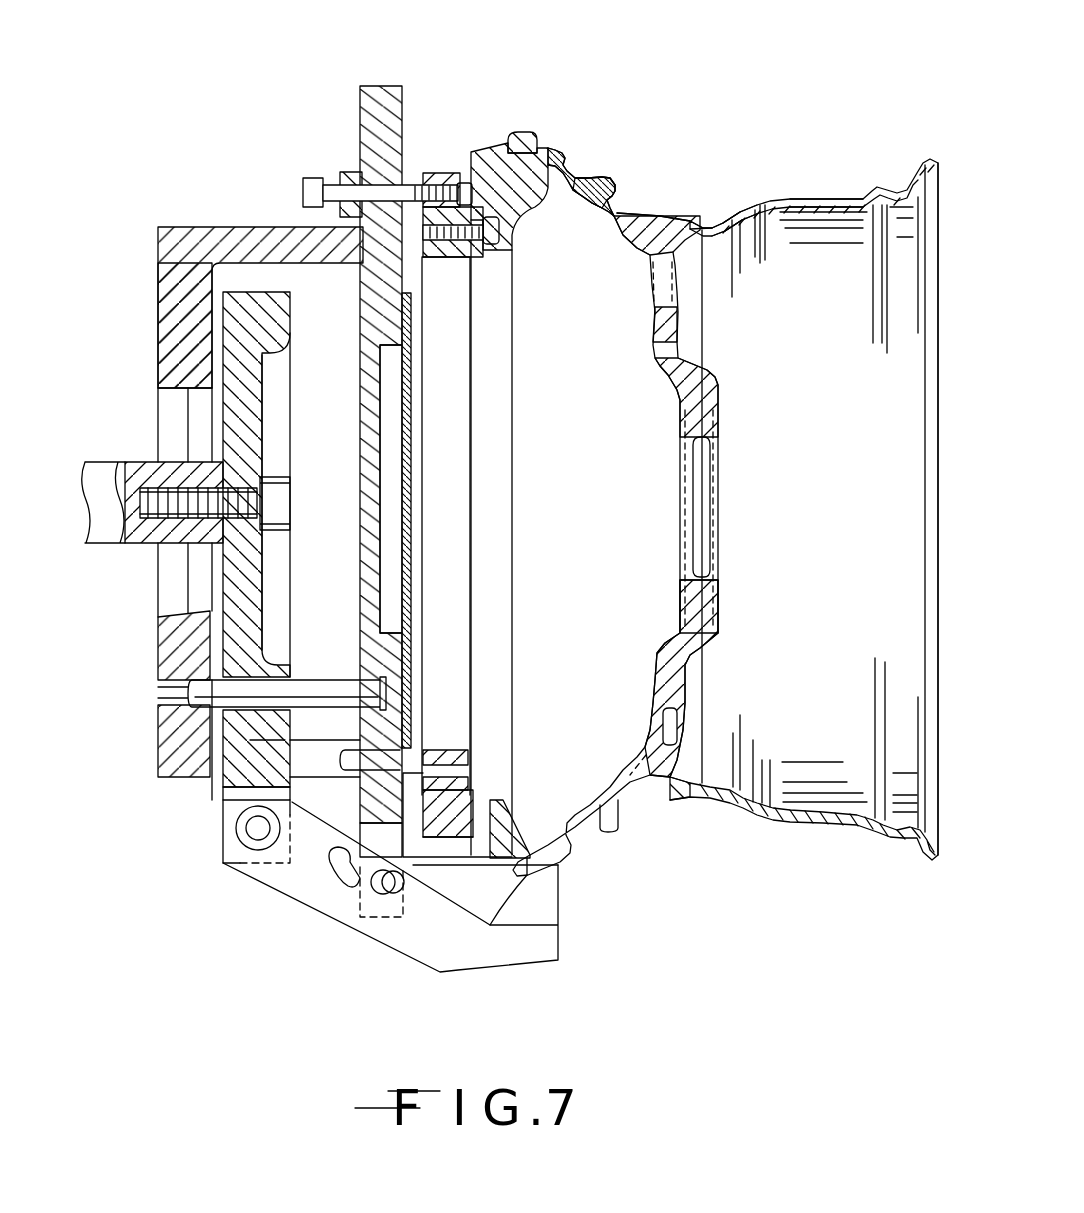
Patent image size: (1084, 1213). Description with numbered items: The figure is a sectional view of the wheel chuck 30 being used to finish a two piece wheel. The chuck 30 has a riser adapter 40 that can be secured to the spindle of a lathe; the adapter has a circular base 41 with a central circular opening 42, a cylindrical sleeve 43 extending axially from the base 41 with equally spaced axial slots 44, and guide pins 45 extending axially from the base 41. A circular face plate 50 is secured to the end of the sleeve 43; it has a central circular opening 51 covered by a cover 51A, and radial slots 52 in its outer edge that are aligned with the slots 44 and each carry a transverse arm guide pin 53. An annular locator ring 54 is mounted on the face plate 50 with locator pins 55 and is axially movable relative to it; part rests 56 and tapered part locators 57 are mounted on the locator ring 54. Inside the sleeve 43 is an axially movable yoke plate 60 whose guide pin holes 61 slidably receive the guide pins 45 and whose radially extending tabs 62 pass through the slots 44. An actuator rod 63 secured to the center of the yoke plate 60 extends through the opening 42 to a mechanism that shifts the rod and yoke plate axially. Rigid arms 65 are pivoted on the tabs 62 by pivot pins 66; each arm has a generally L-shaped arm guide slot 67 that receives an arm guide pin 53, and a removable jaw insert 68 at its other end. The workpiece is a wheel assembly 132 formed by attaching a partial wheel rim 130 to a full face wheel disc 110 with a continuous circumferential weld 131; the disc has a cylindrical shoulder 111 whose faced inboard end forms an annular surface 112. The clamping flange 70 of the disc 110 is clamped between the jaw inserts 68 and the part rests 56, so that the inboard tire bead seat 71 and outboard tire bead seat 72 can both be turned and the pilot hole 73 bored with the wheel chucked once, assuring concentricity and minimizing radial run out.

The chuck 30 is at (386, 53).
The riser adapter 40 is at (208, 203).
The circular base 41 is at (168, 305).
The central circular opening 42 is at (158, 432).
The cylindrical sleeve 43 is at (242, 228).
The axial slots 44 is at (312, 733).
The guide pins 45 is at (328, 692).
The circular face plate 50 is at (396, 106).
The central circular opening 51 is at (357, 443).
The cover 51A is at (413, 421).
The radial slots 52 is at (430, 792).
The arm guide pin 53 is at (377, 890).
The annular locator ring 54 is at (462, 502).
The locator pins 55 is at (328, 186).
The part rests 56 is at (503, 837).
The part locators 57 is at (535, 188).
The yoke plate 60 is at (285, 318).
The guide pin holes 61 is at (296, 671).
The radially extending tabs 62 is at (232, 790).
The actuator rod 63 is at (110, 545).
The rigid arms 65 is at (415, 940).
The pivot pin 66 is at (257, 833).
The arm guide slot 67 is at (340, 874).
The removable jaw insert 68 is at (545, 898).
The clamping flange 70 is at (528, 133).
The inboard tire bead seat 71 is at (892, 195).
The outboard tire bead seat 72 is at (598, 176).
The pilot hole 73 is at (726, 487).
The full face wheel disc 110 is at (667, 807).
The cylindrical shoulder 111 is at (666, 216).
The annular surface 112 is at (727, 215).
The partial wheel rim 130 is at (820, 198).
The continuous circumferential weld 131 is at (700, 214).
The wheel assembly 132 is at (747, 136).